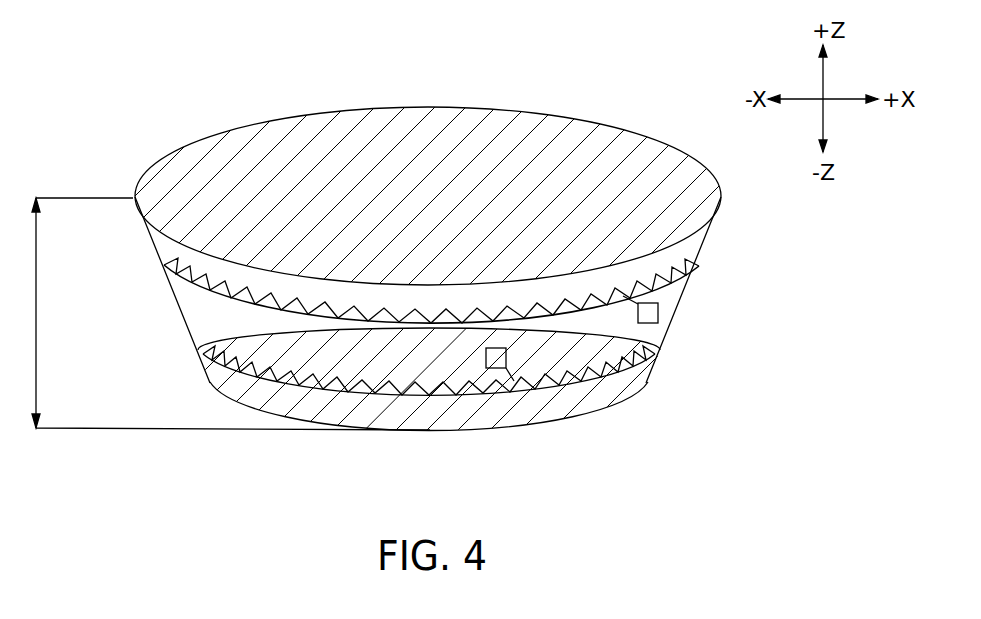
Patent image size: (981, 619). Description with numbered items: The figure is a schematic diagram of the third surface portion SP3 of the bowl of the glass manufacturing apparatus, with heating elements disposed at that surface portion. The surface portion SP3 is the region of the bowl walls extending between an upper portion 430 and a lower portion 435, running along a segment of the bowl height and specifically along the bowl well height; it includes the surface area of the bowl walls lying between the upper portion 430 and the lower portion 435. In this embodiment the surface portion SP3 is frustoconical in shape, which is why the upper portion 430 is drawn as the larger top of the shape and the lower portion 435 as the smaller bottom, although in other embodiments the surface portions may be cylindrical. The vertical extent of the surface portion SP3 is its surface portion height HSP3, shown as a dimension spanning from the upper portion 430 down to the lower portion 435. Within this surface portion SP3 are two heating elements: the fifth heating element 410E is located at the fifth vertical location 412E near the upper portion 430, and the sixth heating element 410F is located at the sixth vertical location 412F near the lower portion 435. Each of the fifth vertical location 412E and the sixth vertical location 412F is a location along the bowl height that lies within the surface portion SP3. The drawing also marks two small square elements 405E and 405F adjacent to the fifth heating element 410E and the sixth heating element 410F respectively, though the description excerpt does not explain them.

The upper portion 430 is at (533, 161).
The fifth heating element 410E is at (164, 265).
The fifth vertical location 412E is at (172, 283).
The pixel E 405E is at (658, 313).
The pixel F 405F is at (486, 358).
The sixth heating element 410F is at (661, 351).
The sixth vertical location 412F is at (633, 376).
The lower portion 435 is at (590, 393).
The third surface portion SP3 is at (766, 321).
The surface portion height HSP3 is at (36, 353).